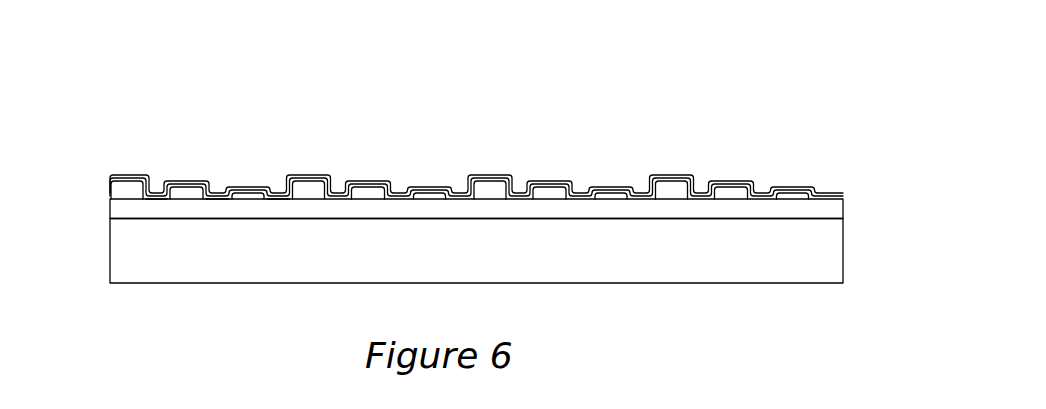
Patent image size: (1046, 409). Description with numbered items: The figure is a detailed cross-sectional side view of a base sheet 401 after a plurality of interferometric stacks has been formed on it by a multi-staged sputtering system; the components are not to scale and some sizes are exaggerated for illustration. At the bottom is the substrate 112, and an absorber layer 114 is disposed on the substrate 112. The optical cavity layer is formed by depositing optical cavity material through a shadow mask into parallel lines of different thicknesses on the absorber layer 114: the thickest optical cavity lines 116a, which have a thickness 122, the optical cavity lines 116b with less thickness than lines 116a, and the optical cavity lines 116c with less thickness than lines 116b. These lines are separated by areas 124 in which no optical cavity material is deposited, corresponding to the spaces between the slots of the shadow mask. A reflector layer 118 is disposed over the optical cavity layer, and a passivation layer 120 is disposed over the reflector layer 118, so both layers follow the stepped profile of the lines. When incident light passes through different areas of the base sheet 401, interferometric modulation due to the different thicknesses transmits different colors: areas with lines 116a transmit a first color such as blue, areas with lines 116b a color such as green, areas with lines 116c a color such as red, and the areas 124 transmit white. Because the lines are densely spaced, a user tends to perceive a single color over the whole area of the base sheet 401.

The base sheet 401 is at (478, 85).
The substrate 112 is at (843, 256).
The absorber layer 114 is at (843, 216).
The optical cavity lines 116a is at (124, 194).
The optical cavity lines 116b is at (184, 196).
The optical cavity lines 116c is at (246, 197).
The reflector layer 118 is at (843, 197).
The passivation layer 120 is at (843, 192).
The thickness 122 is at (103, 175).
The areas 124 is at (155, 198).